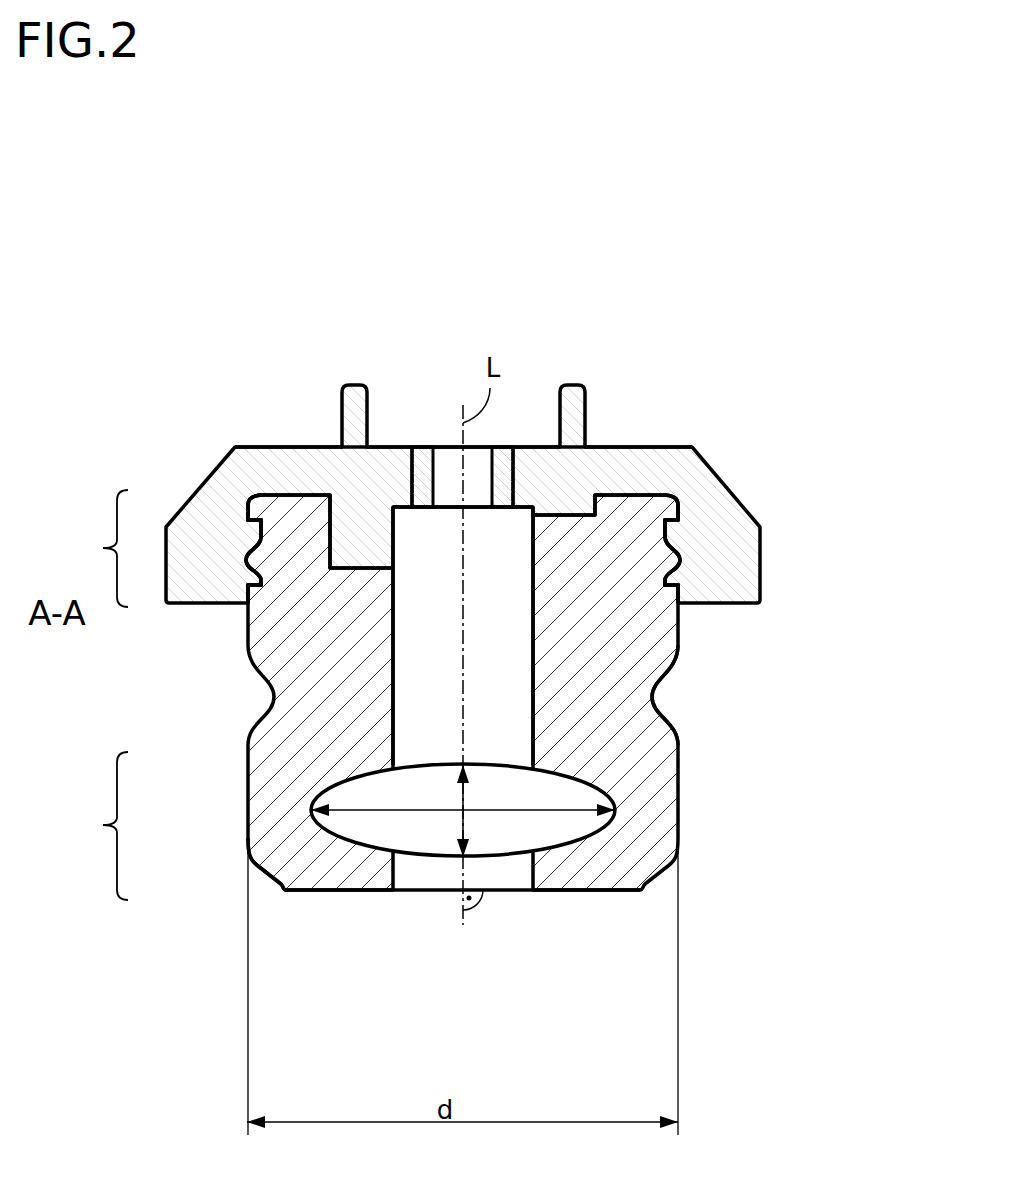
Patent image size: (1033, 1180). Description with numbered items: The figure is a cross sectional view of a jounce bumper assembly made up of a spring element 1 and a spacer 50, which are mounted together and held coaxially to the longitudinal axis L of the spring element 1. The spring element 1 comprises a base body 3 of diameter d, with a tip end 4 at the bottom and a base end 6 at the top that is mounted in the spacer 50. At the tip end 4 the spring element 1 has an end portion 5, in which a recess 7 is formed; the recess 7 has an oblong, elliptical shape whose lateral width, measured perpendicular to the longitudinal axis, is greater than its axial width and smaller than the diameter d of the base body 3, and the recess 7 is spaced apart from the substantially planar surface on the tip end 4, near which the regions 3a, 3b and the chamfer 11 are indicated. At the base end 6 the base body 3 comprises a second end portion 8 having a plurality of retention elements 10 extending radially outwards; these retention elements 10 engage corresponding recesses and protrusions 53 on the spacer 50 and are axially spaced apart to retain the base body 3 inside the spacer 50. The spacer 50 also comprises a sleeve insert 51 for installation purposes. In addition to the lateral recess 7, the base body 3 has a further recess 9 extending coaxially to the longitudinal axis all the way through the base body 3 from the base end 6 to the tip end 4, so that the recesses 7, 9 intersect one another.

The spring element 1 is at (293, 720).
The base body 3 is at (670, 715).
The bottom end face 3a is at (465, 828).
The inner chamber width 3b is at (415, 810).
The tip end 4 is at (593, 915).
The end portion 5 is at (104, 826).
The base end 6 is at (267, 477).
The recess 7 is at (512, 822).
The second end portion 8 is at (105, 548).
The further recess 9 is at (442, 607).
The retention elements 10 is at (257, 565).
The lower chamfer 11 is at (322, 893).
The spacer 50 is at (762, 570).
The sleeve insert 51 is at (517, 480).
The recesses and protrusions 53 is at (677, 588).